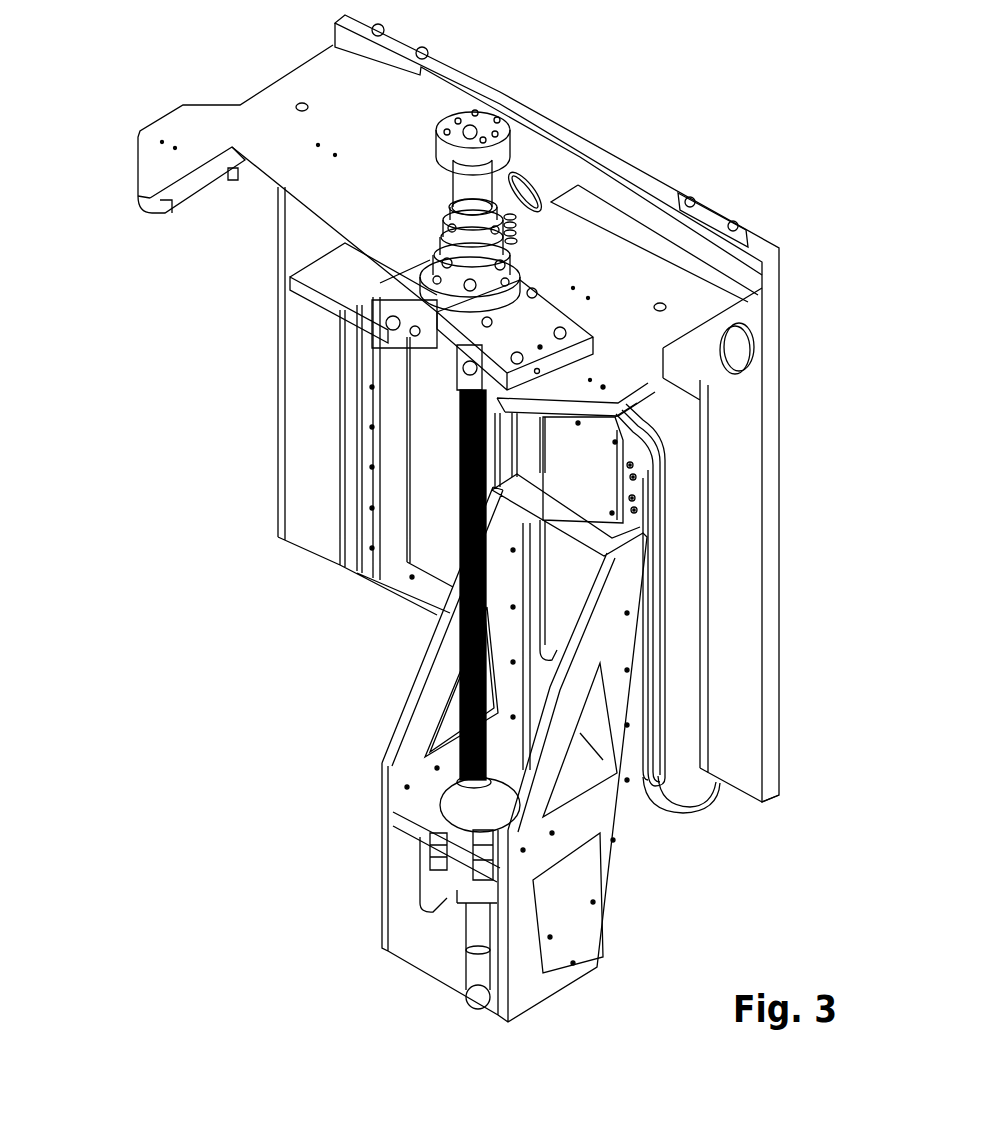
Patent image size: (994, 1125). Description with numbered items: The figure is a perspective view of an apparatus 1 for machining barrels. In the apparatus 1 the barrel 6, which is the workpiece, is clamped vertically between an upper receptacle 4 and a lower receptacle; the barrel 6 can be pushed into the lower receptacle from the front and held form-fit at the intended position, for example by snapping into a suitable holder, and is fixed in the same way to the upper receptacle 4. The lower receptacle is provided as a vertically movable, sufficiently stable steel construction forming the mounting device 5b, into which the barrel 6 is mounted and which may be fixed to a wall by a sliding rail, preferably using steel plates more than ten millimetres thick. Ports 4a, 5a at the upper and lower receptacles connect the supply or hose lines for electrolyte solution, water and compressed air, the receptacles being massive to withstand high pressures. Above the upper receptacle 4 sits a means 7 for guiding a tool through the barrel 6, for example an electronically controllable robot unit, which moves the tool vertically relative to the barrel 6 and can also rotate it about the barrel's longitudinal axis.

The apparatus 1 is at (682, 140).
The upper receptacle 4 is at (452, 312).
The ports 4a is at (438, 300).
The ports 5a is at (467, 1000).
The mounting device 5b is at (430, 810).
The barrel 6 is at (460, 387).
The means for guiding a tool 7 is at (468, 192).